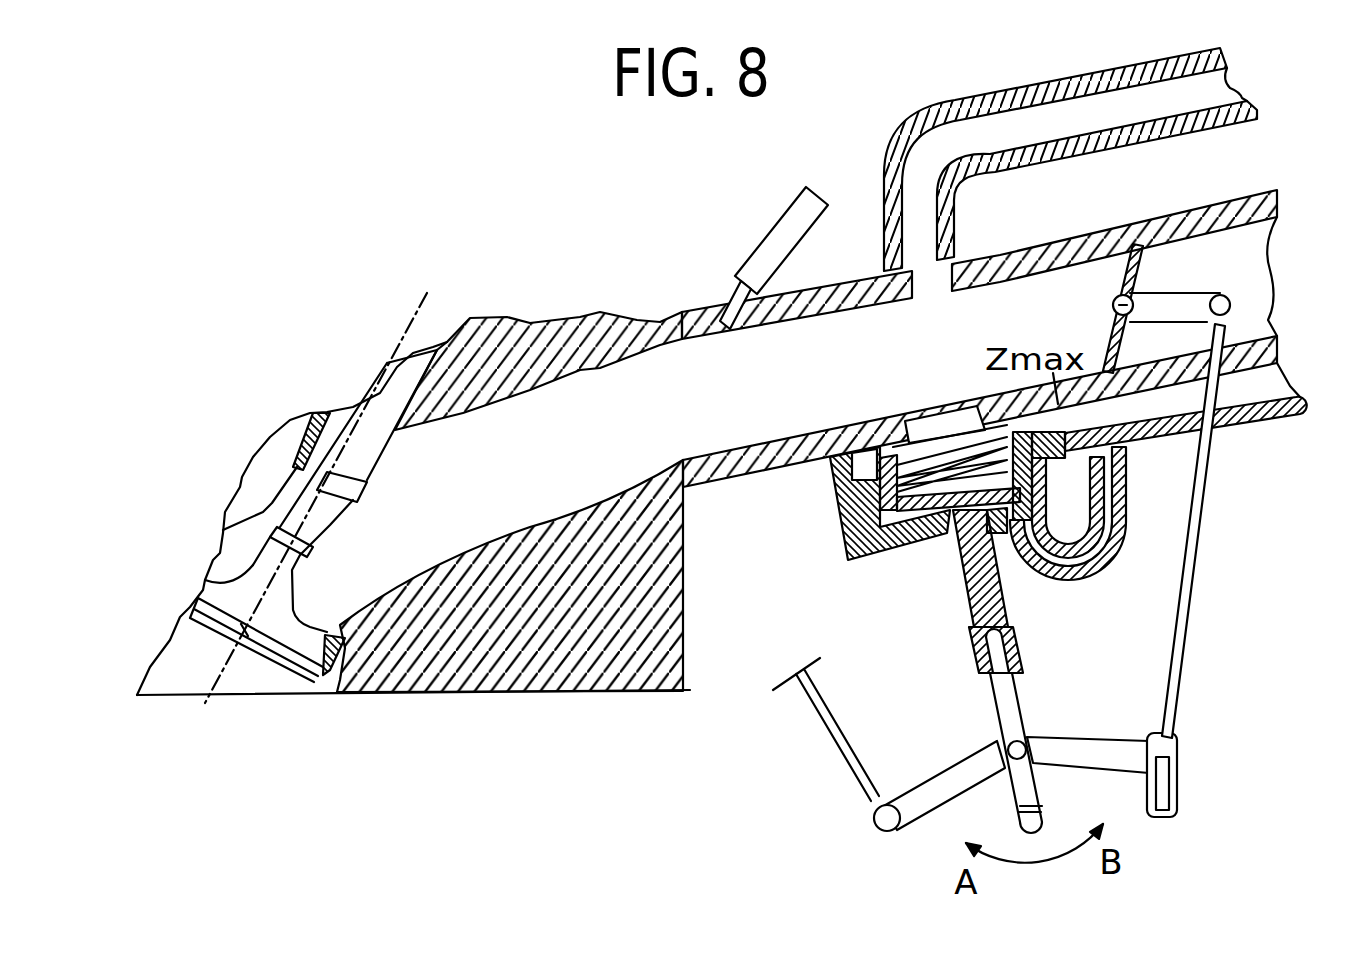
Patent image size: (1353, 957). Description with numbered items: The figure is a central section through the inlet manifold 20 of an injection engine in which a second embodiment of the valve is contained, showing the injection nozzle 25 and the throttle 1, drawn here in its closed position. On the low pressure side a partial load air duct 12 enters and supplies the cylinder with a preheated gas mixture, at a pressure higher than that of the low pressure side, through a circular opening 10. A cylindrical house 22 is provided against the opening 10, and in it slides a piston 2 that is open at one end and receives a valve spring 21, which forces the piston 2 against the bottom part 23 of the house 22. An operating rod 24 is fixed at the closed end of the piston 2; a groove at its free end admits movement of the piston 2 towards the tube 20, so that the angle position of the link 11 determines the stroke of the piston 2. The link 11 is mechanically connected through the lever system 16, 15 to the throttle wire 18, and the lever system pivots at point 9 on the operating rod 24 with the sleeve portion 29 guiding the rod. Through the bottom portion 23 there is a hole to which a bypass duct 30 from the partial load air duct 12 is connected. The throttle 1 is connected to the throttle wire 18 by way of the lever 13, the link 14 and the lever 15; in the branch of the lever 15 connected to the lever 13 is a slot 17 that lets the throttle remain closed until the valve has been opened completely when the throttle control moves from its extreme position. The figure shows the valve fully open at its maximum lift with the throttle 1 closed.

The throttle 1 is at (1113, 303).
The piston 2 is at (893, 480).
The lever pivot 9 is at (1017, 740).
The circular opening 10 is at (940, 410).
The link 11 is at (1005, 697).
The partial load air duct 12 is at (1118, 412).
The lever 13 is at (1170, 310).
The link 14 is at (1196, 537).
The lever 15 is at (1083, 750).
The lever system 16 is at (1043, 802).
The slot 17 is at (1162, 790).
The throttle wire 18 is at (840, 743).
The inlet manifold 20 is at (832, 283).
The valve spring 21 is at (877, 527).
The cylindrical house 22 is at (865, 520).
The bottom part 23 is at (935, 535).
The operating rod 24 is at (1010, 620).
The injection nozzle 25 is at (777, 247).
The sleeve 29 is at (1021, 522).
The bypass duct 30 is at (1110, 543).